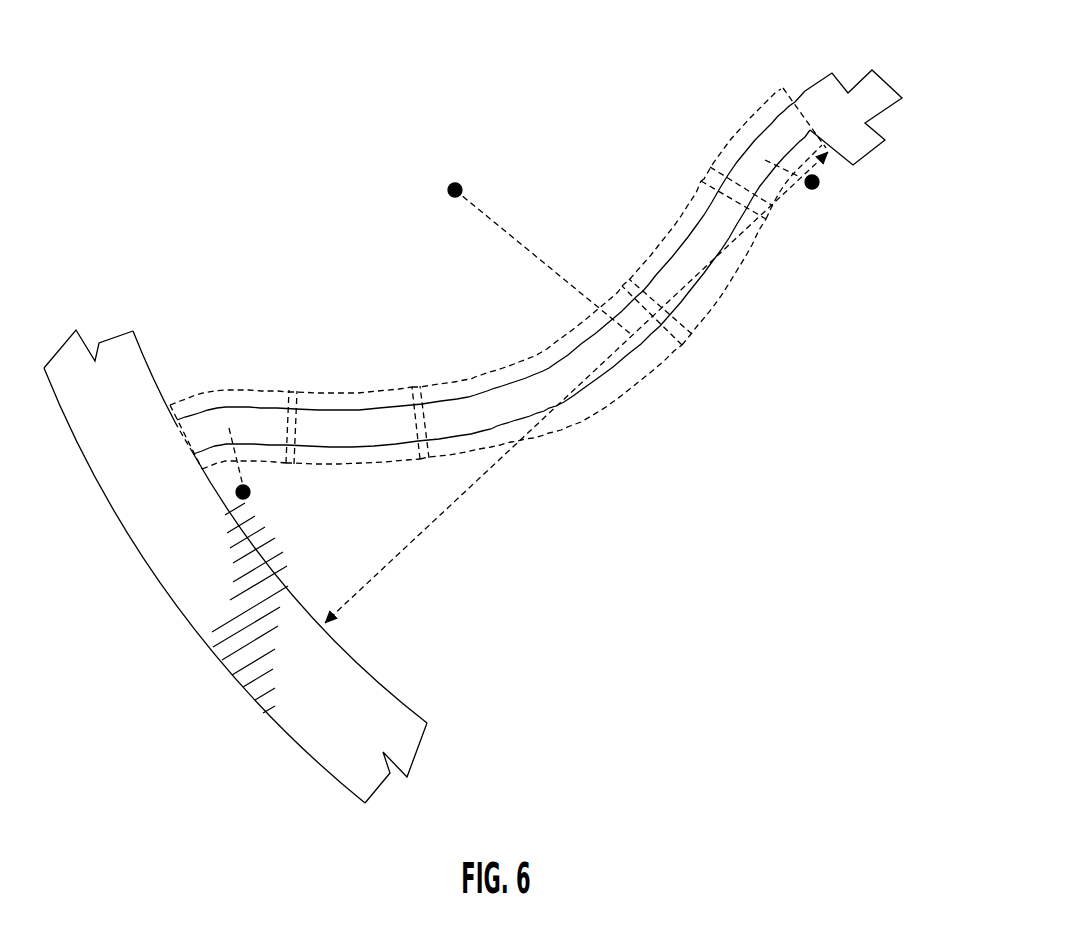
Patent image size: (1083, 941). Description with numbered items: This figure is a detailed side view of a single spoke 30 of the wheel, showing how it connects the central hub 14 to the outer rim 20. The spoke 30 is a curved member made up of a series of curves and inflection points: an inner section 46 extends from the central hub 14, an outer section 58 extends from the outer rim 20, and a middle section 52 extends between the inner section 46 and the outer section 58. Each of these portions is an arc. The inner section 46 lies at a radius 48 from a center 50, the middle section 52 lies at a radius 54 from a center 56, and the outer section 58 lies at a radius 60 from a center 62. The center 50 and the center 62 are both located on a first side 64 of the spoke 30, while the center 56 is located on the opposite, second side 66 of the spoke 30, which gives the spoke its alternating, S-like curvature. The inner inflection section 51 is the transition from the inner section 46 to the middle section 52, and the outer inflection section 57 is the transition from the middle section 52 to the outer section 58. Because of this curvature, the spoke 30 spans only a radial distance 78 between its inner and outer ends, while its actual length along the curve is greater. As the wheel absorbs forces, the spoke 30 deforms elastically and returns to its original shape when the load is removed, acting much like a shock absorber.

The central hub 14 is at (876, 99).
The outer rim 20 is at (137, 487).
The spoke 30 is at (671, 272).
The inner section 46 is at (741, 101).
The radius 48 is at (773, 178).
The center 50 is at (823, 198).
The inner inflection section 51 is at (687, 195).
The middle section 52 is at (527, 480).
The radius 54 is at (504, 259).
The center 56 is at (447, 185).
The outer inflection section 57 is at (340, 381).
The outer section 58 is at (217, 369).
The radius 60 is at (258, 477).
The center 62 is at (264, 511).
The first side 64 is at (629, 387).
The second side 66 is at (455, 382).
The radial distance 78 is at (408, 550).